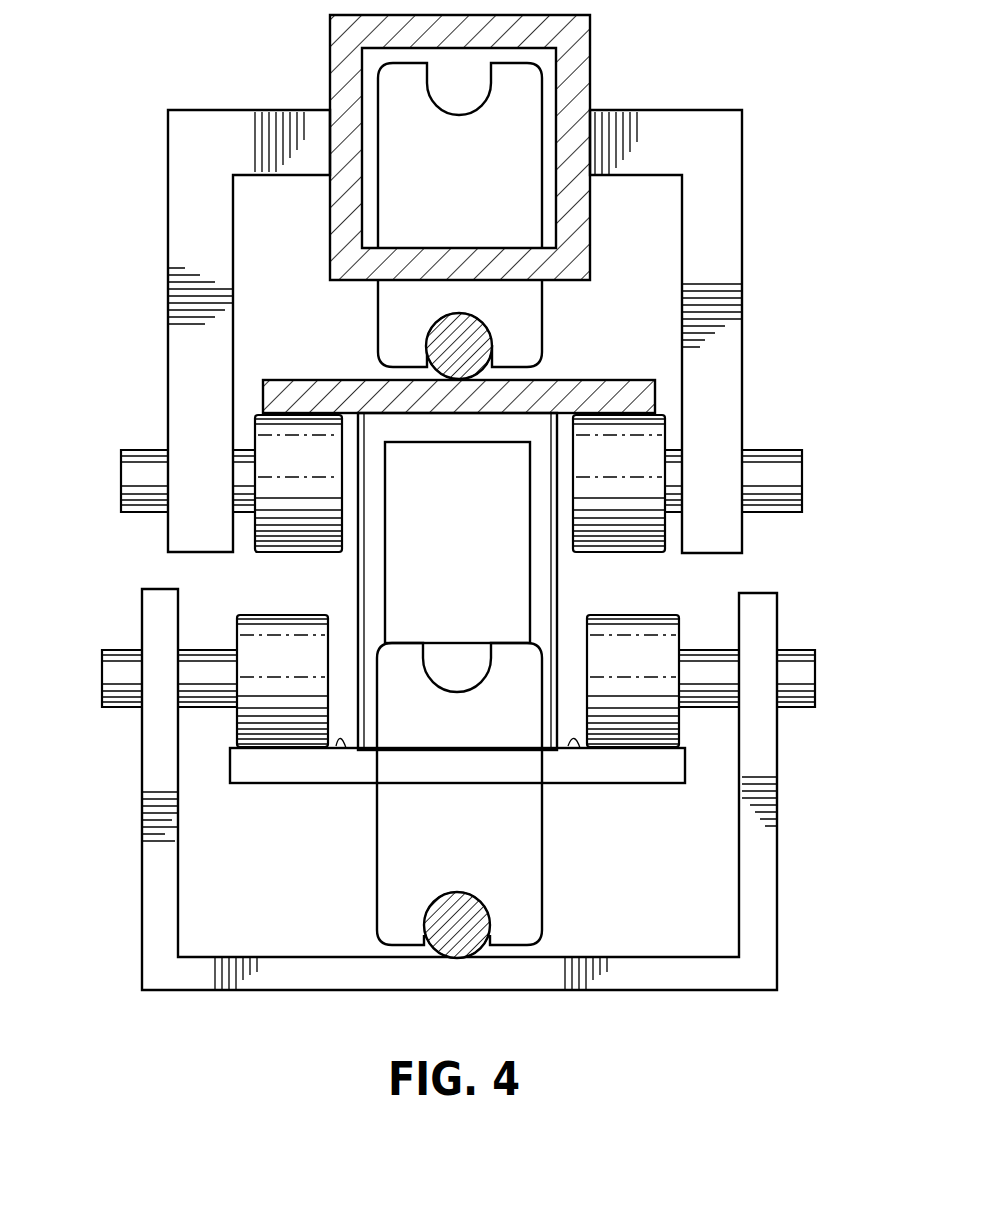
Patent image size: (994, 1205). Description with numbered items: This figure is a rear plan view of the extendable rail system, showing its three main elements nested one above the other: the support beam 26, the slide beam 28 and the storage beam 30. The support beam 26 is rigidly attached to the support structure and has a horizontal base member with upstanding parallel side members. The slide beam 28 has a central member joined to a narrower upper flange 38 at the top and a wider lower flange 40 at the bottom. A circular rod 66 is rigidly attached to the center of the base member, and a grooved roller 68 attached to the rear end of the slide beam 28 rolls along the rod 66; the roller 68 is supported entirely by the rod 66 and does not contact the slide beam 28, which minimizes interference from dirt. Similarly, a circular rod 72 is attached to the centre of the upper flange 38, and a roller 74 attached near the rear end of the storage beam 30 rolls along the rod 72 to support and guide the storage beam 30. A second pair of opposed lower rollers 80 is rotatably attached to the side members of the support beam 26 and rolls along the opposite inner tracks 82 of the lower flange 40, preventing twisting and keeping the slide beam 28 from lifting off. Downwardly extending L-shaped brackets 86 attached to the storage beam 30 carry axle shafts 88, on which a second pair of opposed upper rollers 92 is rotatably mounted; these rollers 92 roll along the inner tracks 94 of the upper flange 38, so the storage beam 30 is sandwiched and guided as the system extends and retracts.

The support beam 26 is at (777, 775).
The slide beam 28 is at (572, 583).
The storage beam 30 is at (606, 55).
The upper flange 38 is at (311, 380).
The lower flange 40 is at (652, 776).
The circular rod 66 is at (478, 954).
The roller 68 is at (542, 876).
The circular rod 72 is at (470, 378).
The roller 74 is at (543, 314).
The second pair of opposed lower rollers 80 is at (256, 612).
The inner tracks 82 is at (338, 748).
The L-shaped brackets 86 is at (742, 237).
The axle shaft 88 is at (140, 452).
The second pair of opposed upper rollers 92 is at (322, 552).
The inner tracks 94 is at (350, 413).